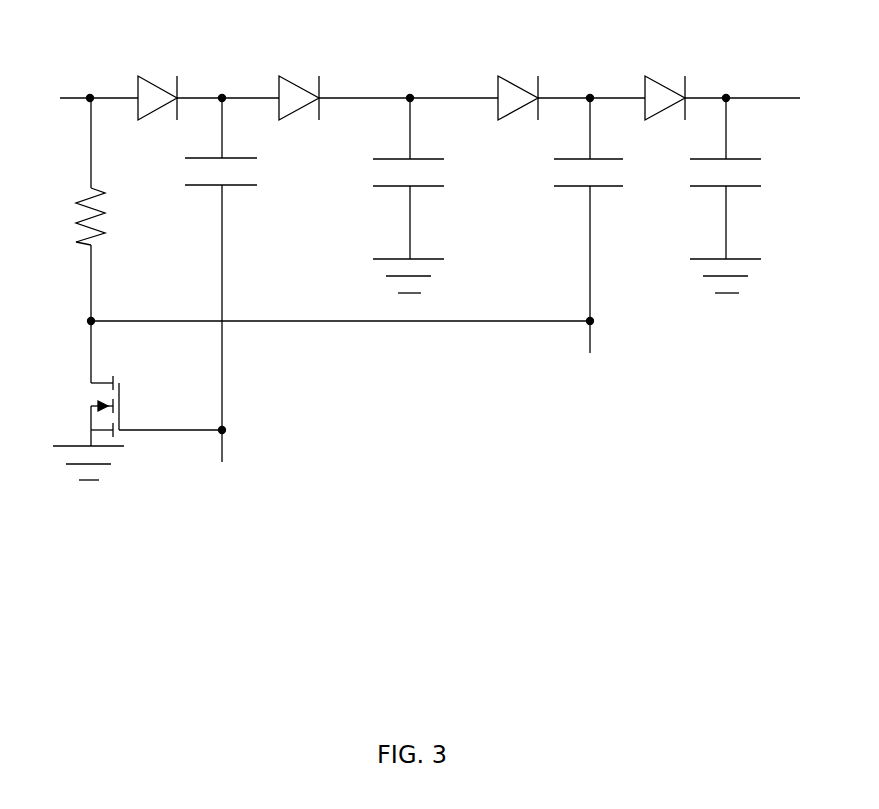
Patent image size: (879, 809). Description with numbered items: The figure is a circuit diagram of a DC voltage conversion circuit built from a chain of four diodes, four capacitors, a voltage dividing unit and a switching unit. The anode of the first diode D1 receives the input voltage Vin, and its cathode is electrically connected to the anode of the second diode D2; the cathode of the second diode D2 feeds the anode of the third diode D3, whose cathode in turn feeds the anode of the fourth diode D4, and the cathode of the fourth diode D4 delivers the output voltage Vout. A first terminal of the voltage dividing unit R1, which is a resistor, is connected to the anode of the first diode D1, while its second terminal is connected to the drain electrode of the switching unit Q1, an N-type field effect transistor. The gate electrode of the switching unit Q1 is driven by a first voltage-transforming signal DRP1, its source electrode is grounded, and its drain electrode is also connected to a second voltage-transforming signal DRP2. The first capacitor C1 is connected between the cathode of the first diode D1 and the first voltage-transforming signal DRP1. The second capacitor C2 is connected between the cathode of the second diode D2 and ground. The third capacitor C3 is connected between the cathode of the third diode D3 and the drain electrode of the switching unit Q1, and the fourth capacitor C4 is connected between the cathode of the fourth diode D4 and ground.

The input voltage Vin is at (84, 80).
The output voltage Vout is at (761, 83).
The first diode D1 is at (157, 78).
The second diode D2 is at (319, 77).
The third diode D3 is at (520, 75).
The fourth diode D4 is at (665, 75).
The first capacitor C1 is at (207, 209).
The second capacitor C2 is at (397, 195).
The third capacitor C3 is at (577, 209).
The fourth capacitor C4 is at (714, 195).
The voltage dividing unit R1 is at (108, 209).
The switching unit Q1 is at (105, 400).
The first voltage-transforming signal DRP1 is at (193, 415).
The second voltage-transforming signal DRP2 is at (357, 354).